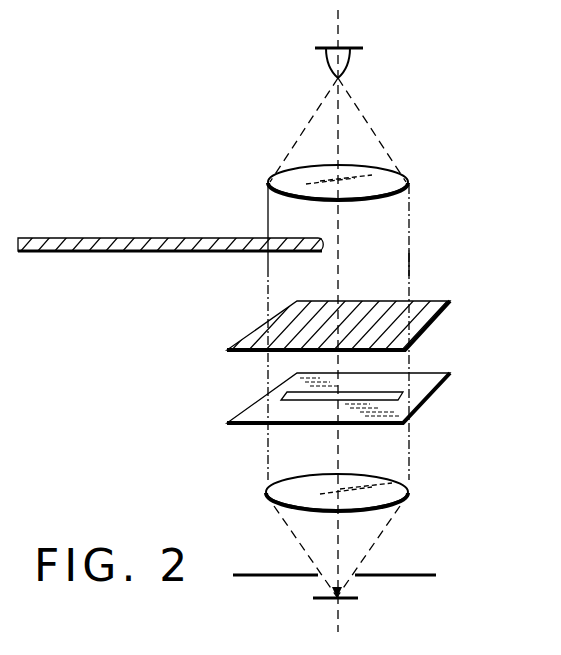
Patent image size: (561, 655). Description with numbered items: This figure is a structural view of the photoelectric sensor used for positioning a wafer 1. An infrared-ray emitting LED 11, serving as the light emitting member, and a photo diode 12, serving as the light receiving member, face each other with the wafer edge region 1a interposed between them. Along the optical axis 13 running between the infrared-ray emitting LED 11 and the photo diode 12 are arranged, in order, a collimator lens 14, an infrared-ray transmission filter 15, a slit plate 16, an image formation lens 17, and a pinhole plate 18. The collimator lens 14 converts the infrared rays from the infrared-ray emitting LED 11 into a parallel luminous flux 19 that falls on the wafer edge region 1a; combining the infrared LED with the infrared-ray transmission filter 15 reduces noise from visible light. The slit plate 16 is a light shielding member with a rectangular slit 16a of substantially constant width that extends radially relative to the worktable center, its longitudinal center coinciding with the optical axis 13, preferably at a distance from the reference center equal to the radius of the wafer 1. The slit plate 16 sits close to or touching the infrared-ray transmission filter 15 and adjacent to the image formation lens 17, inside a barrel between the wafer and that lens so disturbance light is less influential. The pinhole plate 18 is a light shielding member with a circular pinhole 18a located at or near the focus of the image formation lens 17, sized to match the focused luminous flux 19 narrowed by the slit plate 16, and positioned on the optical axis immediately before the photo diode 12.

The wafer 1 is at (92, 253).
The wafer edge region 1a is at (288, 228).
The infrared-ray emitting LED 11 is at (349, 62).
The photo diode 12 is at (355, 600).
The optical axis 13 is at (340, 10).
The collimator lens 14 is at (408, 182).
The infrared-ray transmission filter 15 is at (428, 313).
The slit plate 16 is at (266, 397).
The slit 16a is at (266, 421).
The image formation lens 17 is at (402, 491).
The pinhole plate 18 is at (410, 575).
The pinhole 18a is at (330, 580).
The parallel luminous flux 19 is at (410, 252).